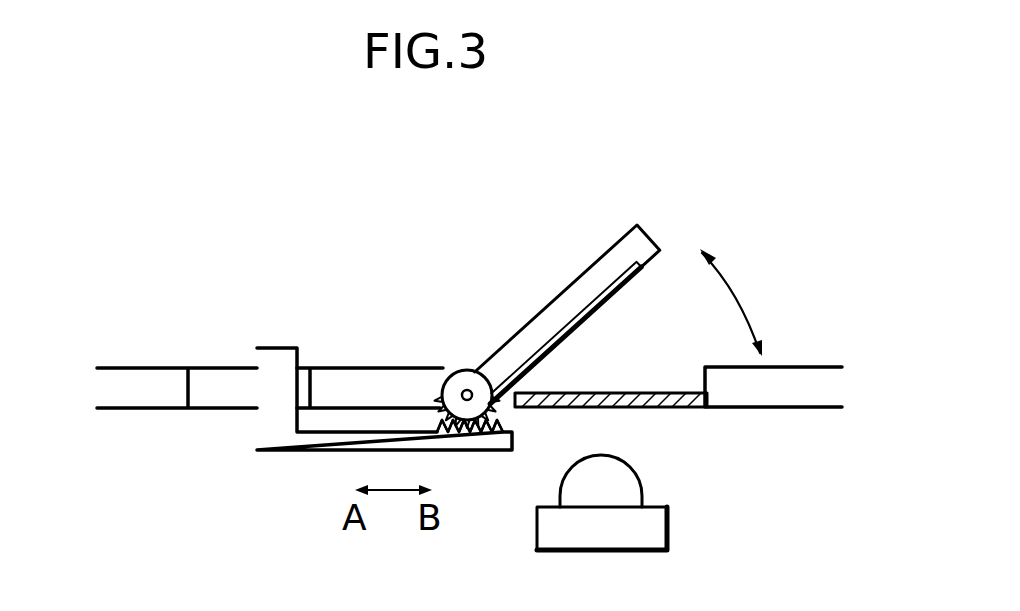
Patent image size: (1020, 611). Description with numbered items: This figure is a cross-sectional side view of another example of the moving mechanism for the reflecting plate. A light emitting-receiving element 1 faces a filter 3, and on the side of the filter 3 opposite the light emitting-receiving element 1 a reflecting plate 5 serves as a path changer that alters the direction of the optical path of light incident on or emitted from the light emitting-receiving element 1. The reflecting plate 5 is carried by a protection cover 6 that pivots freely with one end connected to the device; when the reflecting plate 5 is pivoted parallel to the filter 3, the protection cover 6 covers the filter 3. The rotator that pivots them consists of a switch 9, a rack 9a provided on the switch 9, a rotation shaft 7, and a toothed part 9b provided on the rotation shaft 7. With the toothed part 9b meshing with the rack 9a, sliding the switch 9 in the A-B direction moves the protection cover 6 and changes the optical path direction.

The light emitting-receiving element 1 is at (630, 490).
The filter 3 is at (682, 407).
The reflecting plate 5 is at (645, 268).
The protection cover 6 is at (602, 270).
The rotation shaft 7 is at (465, 390).
The switch 9 is at (268, 433).
The rack 9a is at (500, 428).
The toothed part 9b is at (490, 407).